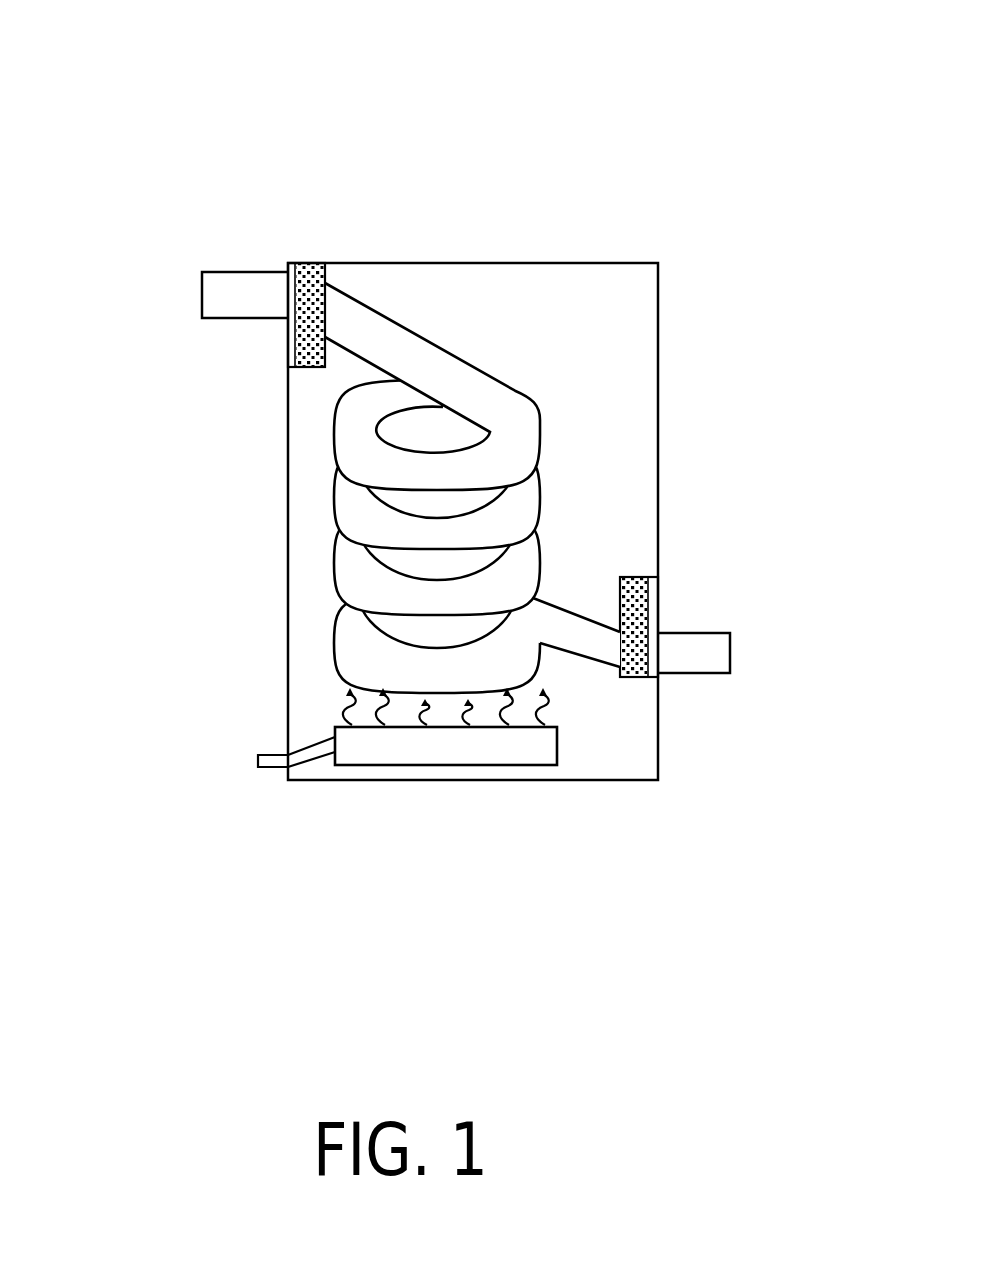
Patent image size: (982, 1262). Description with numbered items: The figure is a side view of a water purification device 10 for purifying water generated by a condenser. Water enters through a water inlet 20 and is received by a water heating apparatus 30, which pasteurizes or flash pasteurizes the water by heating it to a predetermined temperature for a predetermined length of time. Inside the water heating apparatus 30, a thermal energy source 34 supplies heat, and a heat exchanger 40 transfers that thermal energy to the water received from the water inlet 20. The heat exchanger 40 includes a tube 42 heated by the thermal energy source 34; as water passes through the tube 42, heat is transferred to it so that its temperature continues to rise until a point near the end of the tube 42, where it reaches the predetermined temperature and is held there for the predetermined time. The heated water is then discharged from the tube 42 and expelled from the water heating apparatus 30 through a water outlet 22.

The water purification device 10 is at (265, 120).
The water inlet 20 is at (201, 294).
The water outlet 22 is at (730, 655).
The water heating apparatus 30 is at (287, 597).
The thermal energy source 34 is at (425, 765).
The heat exchanger 40 is at (338, 508).
The tube 42 is at (330, 425).